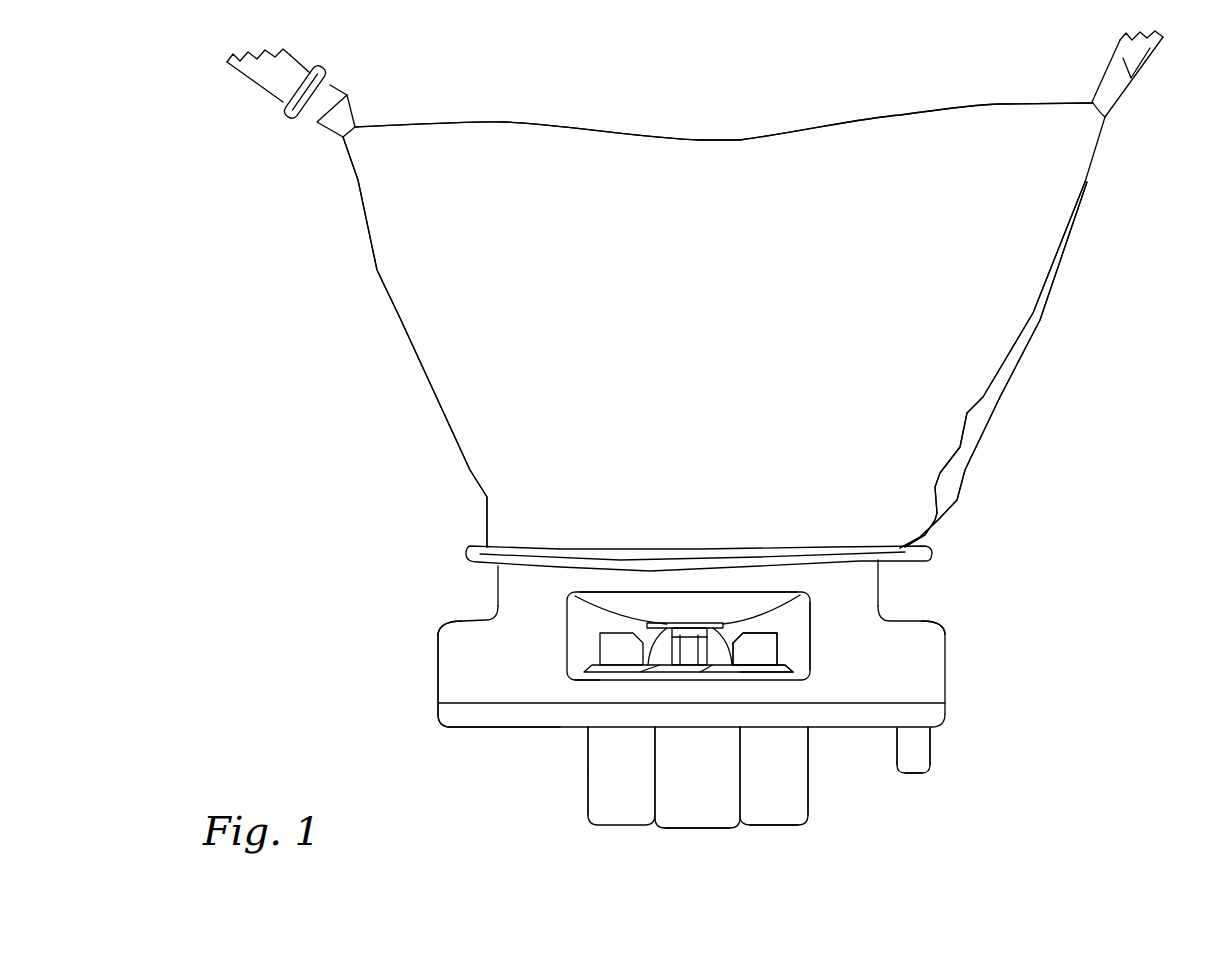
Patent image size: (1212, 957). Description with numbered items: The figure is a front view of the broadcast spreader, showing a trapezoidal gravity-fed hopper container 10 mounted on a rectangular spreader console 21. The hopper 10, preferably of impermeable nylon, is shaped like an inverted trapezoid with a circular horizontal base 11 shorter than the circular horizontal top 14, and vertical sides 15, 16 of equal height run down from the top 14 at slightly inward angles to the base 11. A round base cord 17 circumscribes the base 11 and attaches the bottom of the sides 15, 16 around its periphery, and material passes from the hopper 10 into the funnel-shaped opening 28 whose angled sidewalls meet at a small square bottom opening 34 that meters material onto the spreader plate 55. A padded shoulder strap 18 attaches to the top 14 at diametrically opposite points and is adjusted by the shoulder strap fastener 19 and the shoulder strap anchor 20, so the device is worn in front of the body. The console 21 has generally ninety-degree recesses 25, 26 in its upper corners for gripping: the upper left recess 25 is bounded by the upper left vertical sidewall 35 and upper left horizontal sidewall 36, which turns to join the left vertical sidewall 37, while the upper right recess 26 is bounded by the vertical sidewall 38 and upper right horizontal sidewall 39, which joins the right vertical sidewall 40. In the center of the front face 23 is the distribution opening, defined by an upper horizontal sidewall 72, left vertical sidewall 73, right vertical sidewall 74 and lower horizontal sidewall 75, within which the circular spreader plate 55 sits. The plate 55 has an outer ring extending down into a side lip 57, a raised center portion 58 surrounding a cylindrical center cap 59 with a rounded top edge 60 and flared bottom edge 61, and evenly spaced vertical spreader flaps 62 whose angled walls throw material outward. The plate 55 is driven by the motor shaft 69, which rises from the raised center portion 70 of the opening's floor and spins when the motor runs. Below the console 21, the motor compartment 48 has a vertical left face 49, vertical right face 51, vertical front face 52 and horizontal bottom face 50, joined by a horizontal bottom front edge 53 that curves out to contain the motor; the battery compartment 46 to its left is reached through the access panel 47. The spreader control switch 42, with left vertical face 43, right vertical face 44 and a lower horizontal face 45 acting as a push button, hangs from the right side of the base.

The hopper container 10 is at (712, 363).
The horizontal base 11 is at (605, 548).
The horizontal top 14 is at (733, 138).
The vertical side 15 is at (395, 315).
The vertical side 16 is at (1041, 318).
The base cord 17 is at (705, 548).
The shoulder strap 18 is at (262, 97).
The shoulder strap fastener 19 is at (290, 115).
The shoulder strap anchor 20 is at (323, 135).
The spreader console 21 is at (462, 680).
The front face 23 is at (895, 700).
The upper left recess 25 is at (438, 575).
The upper right recess 26 is at (944, 575).
The funnel-shaped opening 28 is at (708, 623).
The bottom opening 34 is at (707, 640).
The upper left vertical sidewall 35 is at (497, 580).
The upper left horizontal sidewall 36 is at (462, 619).
The left vertical sidewall 37 is at (437, 663).
The upper left vertical sidewall 38 is at (879, 578).
The upper right horizontal sidewall 39 is at (925, 619).
The right vertical sidewall 40 is at (945, 663).
The spreader control switch 42 is at (900, 765).
The left vertical face 43 is at (897, 752).
The right vertical face 44 is at (931, 752).
The lower horizontal face 45 is at (913, 775).
The battery compartment 46 is at (608, 797).
The access panel 47 is at (588, 785).
The motor compartment 48 is at (685, 797).
The vertical left face 49 is at (588, 758).
The horizontal bottom face 50 is at (695, 831).
The vertical right face 51 is at (809, 778).
The vertical front face 52 is at (776, 784).
The horizontal bottom front edge 53 is at (766, 832).
The spreader plate 55 is at (780, 650).
The side lip 57 is at (800, 678).
The raised center portion 58 is at (690, 674).
The cylindrical center cap 59 is at (666, 626).
The rounded top edge 60 is at (672, 623).
The flared bottom edge 61 is at (672, 633).
The vertical spreader flaps 62 is at (604, 664).
The motor shaft 69 is at (712, 674).
The raised center portion 70 is at (645, 678).
The upper horizontal sidewall 72 is at (718, 594).
The left vertical sidewall 73 is at (567, 641).
The right vertical sidewall 74 is at (811, 616).
The lower horizontal sidewall 75 is at (592, 677).